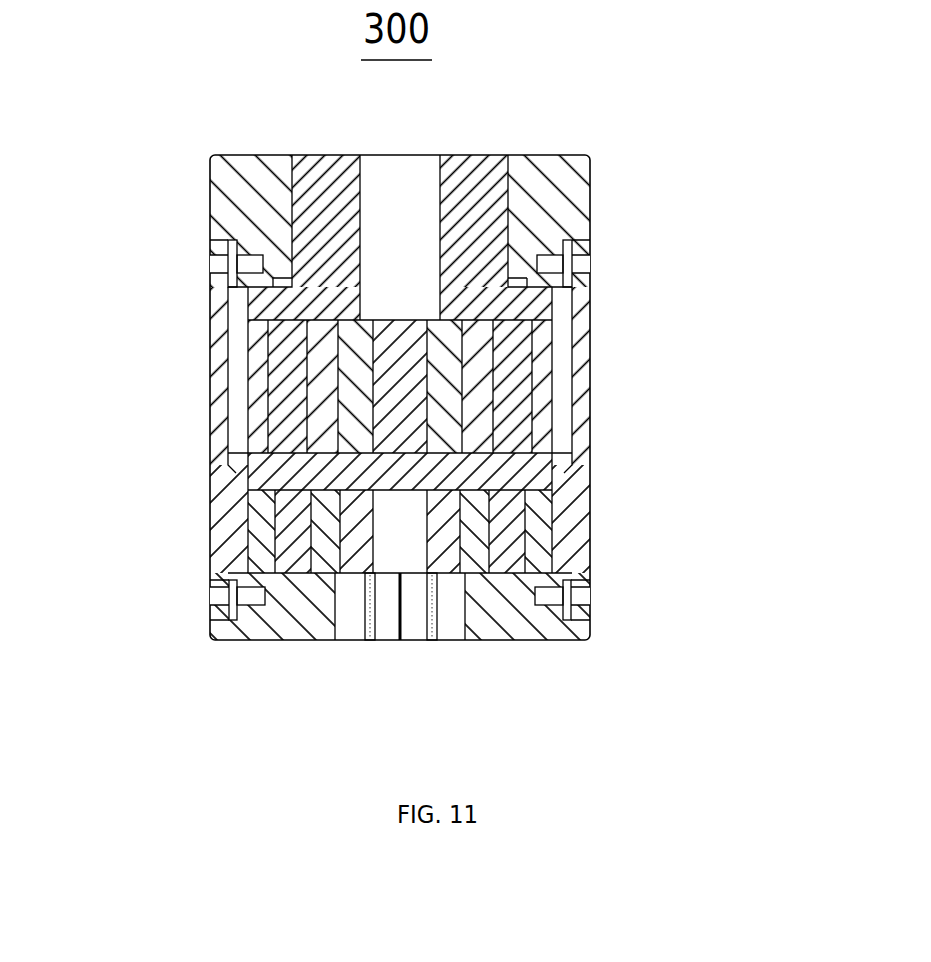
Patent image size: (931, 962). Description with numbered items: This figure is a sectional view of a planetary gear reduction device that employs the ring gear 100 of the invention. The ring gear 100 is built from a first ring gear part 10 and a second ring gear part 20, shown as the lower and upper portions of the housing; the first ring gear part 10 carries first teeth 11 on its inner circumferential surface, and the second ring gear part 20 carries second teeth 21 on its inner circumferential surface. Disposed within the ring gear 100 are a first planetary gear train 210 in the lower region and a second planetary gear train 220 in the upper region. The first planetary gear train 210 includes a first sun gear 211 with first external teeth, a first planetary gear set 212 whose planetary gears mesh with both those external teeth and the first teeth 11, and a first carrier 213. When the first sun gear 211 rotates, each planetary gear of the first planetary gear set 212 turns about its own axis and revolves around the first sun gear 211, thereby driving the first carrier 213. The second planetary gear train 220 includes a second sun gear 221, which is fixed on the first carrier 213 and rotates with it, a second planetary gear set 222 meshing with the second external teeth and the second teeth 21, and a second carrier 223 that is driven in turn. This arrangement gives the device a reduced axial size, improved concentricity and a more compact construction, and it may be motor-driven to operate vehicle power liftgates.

The ring gear 100 is at (212, 465).
The first ring gear part 10 is at (222, 558).
The first teeth 11 is at (237, 517).
The second ring gear part 20 is at (216, 299).
The second teeth 21 is at (213, 377).
The first planetary gear train 210 is at (538, 522).
The first sun gear 211 is at (447, 545).
The first planetary gear set 212 is at (533, 520).
The first carrier 213 is at (510, 472).
The second planetary gear train 220 is at (547, 304).
The second sun gear 221 is at (447, 368).
The second planetary gear set 222 is at (542, 330).
The second carrier 223 is at (476, 258).